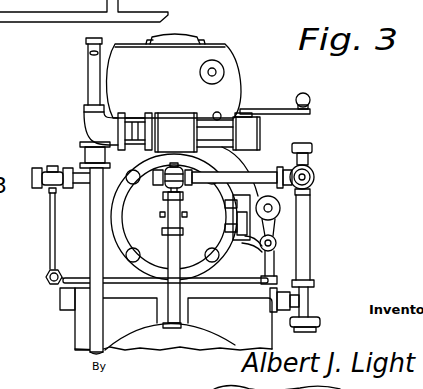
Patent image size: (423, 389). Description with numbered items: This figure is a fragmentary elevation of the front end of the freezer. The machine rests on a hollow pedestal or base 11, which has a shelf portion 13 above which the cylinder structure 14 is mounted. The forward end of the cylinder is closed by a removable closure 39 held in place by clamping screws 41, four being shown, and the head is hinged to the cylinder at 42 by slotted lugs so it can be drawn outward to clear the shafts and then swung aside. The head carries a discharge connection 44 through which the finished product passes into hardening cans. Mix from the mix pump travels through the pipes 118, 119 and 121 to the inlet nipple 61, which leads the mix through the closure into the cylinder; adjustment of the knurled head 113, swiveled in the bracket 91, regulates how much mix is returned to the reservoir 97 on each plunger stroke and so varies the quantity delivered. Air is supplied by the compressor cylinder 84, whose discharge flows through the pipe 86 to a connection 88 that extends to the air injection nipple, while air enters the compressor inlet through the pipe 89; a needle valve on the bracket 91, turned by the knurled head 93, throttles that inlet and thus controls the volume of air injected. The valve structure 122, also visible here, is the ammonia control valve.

The reservoir 97 is at (227, 80).
The valve structure 122 is at (180, 120).
The inlet nipple 61 is at (174, 164).
The connection 88 is at (60, 167).
The pipe 121 is at (264, 172).
The pipe 119 is at (321, 173).
The clamping screws 41 is at (221, 172).
The discharge connection 44 is at (182, 210).
The removable closure 39 is at (122, 218).
The hinge 42 is at (228, 209).
The knurled head 113 is at (281, 208).
The pipe 86 is at (51, 240).
The cylinder structure 14 is at (105, 250).
The bracket 91 is at (284, 227).
The pipe 118 is at (311, 247).
The knurled head 93 is at (278, 247).
The cylinder 84 is at (68, 313).
The pipe 89 is at (122, 283).
The shelf portion 13 is at (218, 299).
The base 11 is at (78, 342).